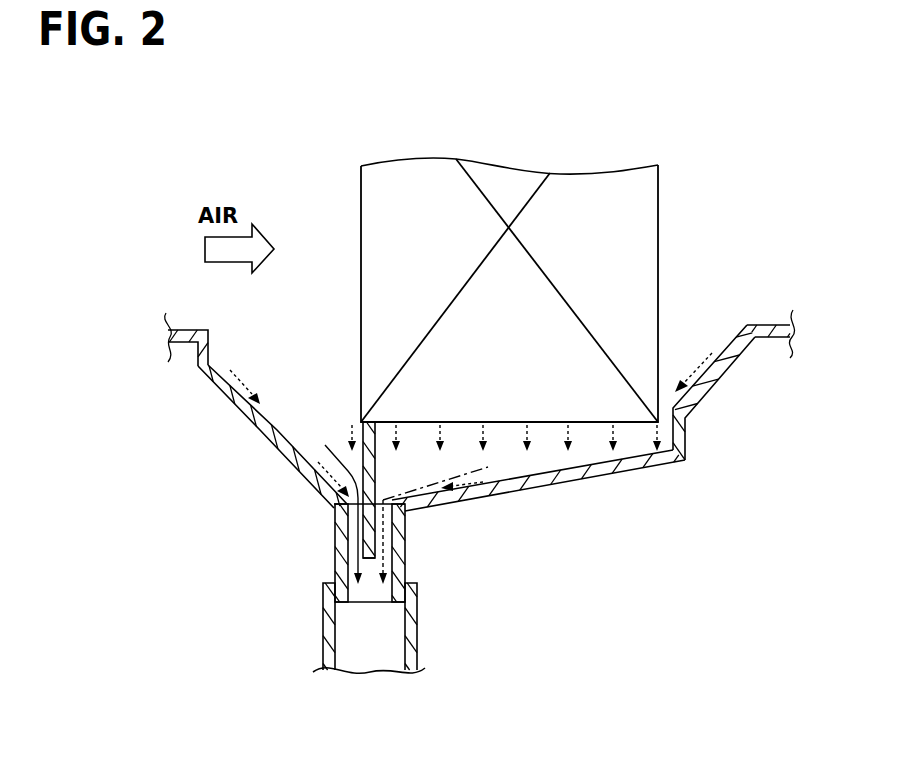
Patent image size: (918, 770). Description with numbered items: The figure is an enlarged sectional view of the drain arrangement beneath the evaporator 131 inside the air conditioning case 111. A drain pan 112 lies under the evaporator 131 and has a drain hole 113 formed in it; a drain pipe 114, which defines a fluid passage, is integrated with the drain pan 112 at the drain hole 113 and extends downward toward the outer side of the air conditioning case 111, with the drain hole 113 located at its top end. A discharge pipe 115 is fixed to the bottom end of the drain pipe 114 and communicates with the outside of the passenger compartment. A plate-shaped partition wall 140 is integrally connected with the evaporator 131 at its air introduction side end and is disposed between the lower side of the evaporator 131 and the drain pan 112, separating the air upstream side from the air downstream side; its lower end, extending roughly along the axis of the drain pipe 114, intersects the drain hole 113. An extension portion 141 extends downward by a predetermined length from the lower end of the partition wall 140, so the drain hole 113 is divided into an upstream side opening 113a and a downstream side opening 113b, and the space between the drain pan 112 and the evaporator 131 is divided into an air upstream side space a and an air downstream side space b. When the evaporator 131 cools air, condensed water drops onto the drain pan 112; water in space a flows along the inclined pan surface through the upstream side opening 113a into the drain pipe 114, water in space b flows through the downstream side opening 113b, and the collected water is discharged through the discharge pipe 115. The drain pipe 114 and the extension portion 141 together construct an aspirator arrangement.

The evaporator 131 is at (413, 180).
The air conditioning case 111 is at (183, 331).
The drain pan 112 is at (236, 405).
The drain hole 113 is at (359, 553).
The upstream side opening 113a is at (335, 521).
The downstream side opening 113b is at (405, 527).
The partition wall 140 is at (363, 462).
The extension portion 141 is at (363, 553).
The drain pipe 114 is at (397, 563).
The discharge pipe 115 is at (329, 655).
The air upstream side space a is at (303, 403).
The air downstream side space b is at (515, 463).